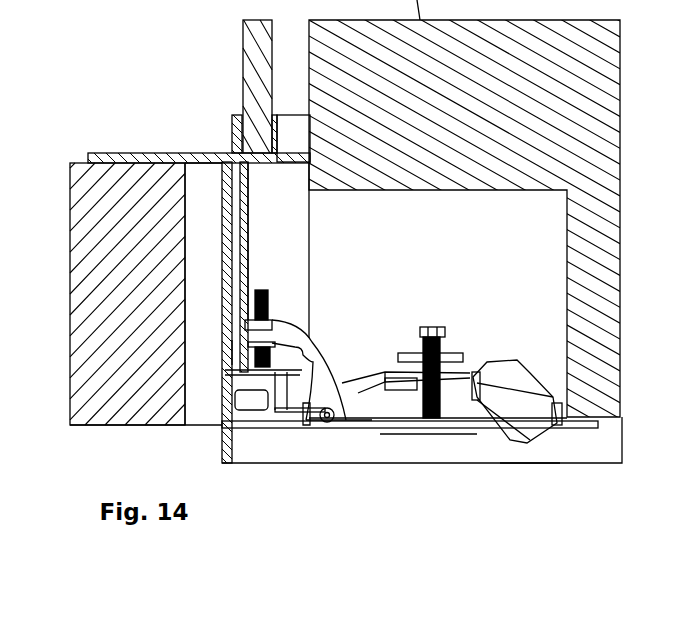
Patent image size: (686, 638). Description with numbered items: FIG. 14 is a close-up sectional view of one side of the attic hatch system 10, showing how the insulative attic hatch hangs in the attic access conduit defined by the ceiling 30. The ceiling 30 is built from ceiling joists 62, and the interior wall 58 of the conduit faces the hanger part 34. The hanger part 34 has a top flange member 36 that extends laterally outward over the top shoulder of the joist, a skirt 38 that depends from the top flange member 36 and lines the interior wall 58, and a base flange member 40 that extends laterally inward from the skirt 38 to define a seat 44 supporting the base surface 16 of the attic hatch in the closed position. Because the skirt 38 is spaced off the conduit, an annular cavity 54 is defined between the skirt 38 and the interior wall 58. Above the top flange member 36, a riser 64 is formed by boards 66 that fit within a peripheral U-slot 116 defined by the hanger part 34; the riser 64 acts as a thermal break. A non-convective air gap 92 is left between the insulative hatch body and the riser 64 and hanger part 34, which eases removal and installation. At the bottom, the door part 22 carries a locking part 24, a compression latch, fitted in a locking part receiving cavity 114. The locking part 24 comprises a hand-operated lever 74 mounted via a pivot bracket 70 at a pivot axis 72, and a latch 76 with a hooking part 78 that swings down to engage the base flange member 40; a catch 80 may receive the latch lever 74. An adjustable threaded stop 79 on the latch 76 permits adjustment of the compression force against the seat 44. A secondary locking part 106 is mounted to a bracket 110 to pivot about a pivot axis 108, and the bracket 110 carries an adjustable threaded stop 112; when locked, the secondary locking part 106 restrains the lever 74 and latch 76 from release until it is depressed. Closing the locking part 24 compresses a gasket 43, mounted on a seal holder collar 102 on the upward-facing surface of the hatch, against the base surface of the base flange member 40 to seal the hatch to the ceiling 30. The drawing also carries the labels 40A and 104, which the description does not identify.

The attic hatch system 10 is at (380, 51).
The base surface 16 is at (432, 192).
The door panel 22 is at (597, 420).
The locking part 24 is at (522, 479).
The ceiling 30 is at (103, 425).
The hanger part 34 is at (184, 160).
The top flange member 36 is at (120, 155).
The skirt 38 is at (223, 217).
The base flange member 40 is at (268, 430).
The channel bottom 40A is at (607, 450).
The gasket 43 is at (257, 433).
The seat 44 is at (240, 347).
The annular cavity 54 is at (200, 407).
The interior wall 58 is at (185, 258).
The ceiling joist 62 is at (62, 405).
The riser 64 is at (679, 290).
The board 66 is at (243, 70).
The pivot bracket 70 is at (331, 422).
The pivot axis 72 is at (355, 430).
The lever 74 is at (405, 425).
The latch 76 is at (346, 331).
The hooking part 78 is at (323, 357).
The adjustable stop 79 is at (270, 300).
The catch 80 is at (223, 352).
The air gap 92 is at (293, 143).
The seal holder collar 102 is at (295, 430).
The spring clip 104 is at (292, 333).
The secondary locking part 106 is at (536, 357).
The pivot axis 108 is at (472, 400).
The bracket 110 is at (465, 388).
The adjustable threaded stop 112 is at (470, 430).
The locking part receiving cavity 114 is at (453, 272).
The peripheral U-slot 116 is at (232, 125).